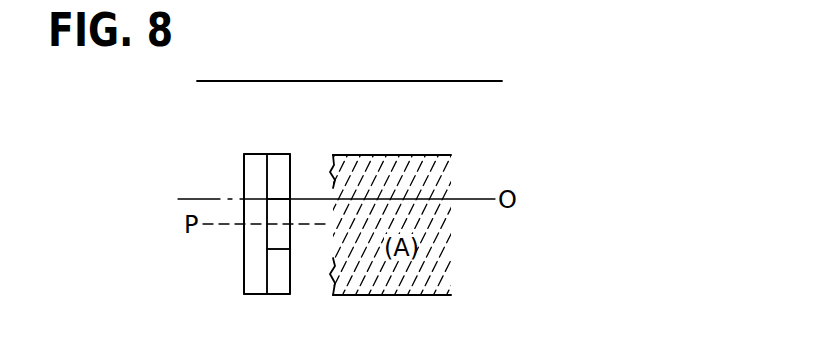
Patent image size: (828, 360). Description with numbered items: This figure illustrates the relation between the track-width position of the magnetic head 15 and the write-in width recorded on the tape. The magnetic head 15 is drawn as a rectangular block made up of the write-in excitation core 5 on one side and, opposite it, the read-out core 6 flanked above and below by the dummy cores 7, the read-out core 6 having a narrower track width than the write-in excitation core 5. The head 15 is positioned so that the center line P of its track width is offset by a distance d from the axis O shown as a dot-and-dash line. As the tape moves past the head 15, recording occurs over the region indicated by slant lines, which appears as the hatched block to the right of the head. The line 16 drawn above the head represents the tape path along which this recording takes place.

The magnetic head 15 is at (280, 143).
The magnetic tape 16 is at (388, 98).
The write-in excitation core 5 is at (256, 215).
The read-out core 6 is at (278, 216).
The dummy cores 7 is at (277, 166).